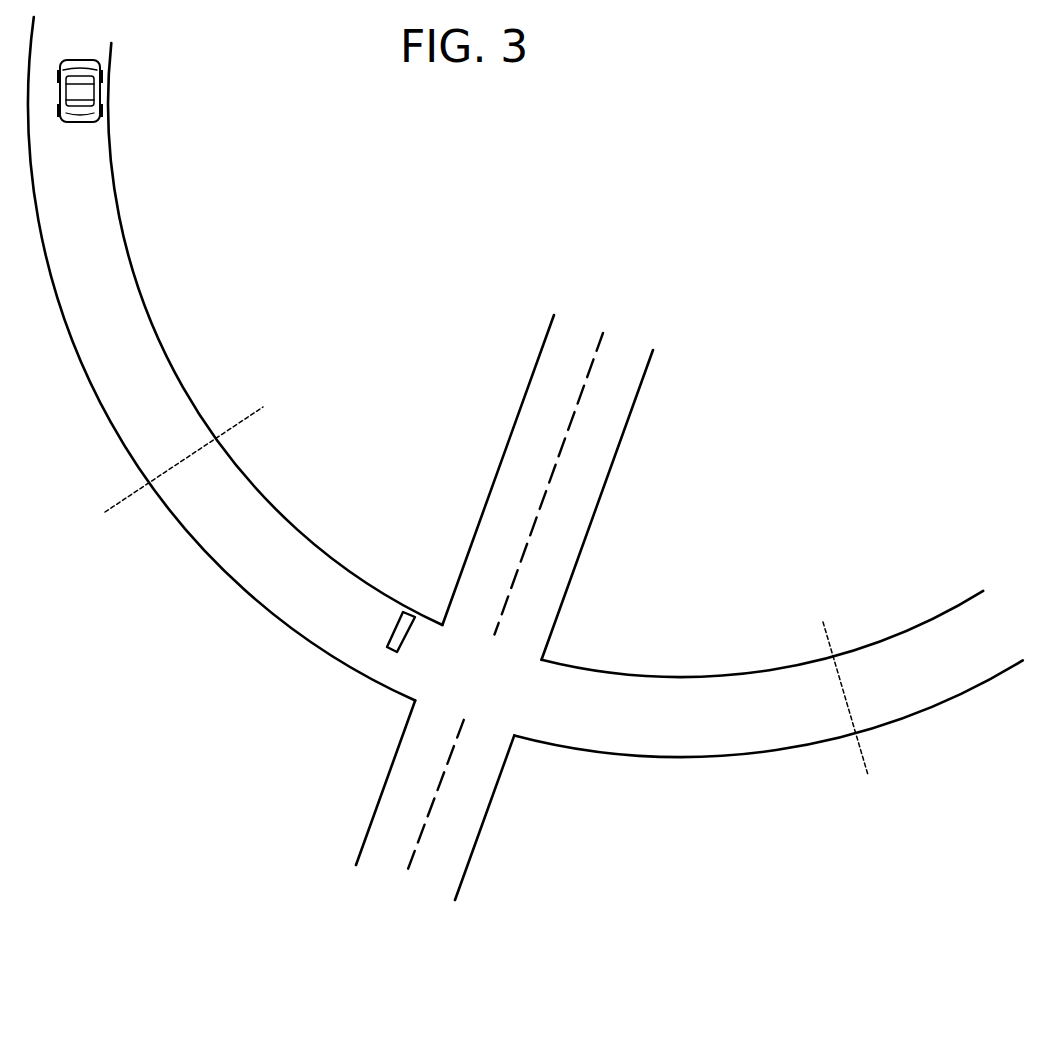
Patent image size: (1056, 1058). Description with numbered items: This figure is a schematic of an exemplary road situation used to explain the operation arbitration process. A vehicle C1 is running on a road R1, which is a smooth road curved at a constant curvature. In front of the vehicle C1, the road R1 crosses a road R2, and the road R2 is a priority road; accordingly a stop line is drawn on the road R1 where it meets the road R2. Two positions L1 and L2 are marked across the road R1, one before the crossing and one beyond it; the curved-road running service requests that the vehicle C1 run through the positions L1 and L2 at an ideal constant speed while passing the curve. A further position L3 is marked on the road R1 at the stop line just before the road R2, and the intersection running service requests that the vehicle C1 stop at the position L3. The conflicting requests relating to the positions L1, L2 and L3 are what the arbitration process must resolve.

The vehicle C1 is at (100, 91).
The road R1 is at (95, 150).
The road R2 is at (577, 517).
The position L1 is at (204, 450).
The position L2 is at (840, 682).
The position L3 is at (373, 612).